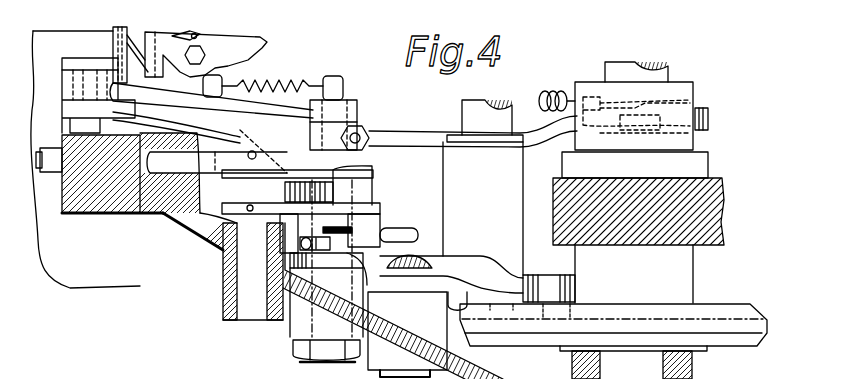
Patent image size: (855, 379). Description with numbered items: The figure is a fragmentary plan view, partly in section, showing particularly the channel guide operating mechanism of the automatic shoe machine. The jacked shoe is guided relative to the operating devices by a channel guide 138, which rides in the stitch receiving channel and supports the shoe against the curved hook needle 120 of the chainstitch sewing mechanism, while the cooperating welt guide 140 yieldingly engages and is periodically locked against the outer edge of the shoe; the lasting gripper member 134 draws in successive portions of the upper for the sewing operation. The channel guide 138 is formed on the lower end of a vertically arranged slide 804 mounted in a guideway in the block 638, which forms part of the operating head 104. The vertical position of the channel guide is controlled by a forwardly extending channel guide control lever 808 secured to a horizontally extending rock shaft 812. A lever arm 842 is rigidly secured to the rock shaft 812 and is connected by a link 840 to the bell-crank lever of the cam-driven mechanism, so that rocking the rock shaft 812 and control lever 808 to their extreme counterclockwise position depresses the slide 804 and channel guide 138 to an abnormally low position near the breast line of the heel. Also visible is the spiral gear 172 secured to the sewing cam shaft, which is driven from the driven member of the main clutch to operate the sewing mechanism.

The operating head 104 is at (203, 245).
The curved hook needle 120 is at (193, 37).
The gripper member 134 is at (100, 62).
The channel guide 138 is at (60, 100).
The welt guide 140 is at (252, 50).
The spiral gear 172 is at (718, 210).
The block 638 is at (130, 193).
The slide 804 is at (100, 214).
The channel guide control lever 808 is at (173, 220).
The rock shaft 812 is at (252, 314).
The link 840 is at (410, 220).
The lever arm 842 is at (380, 205).